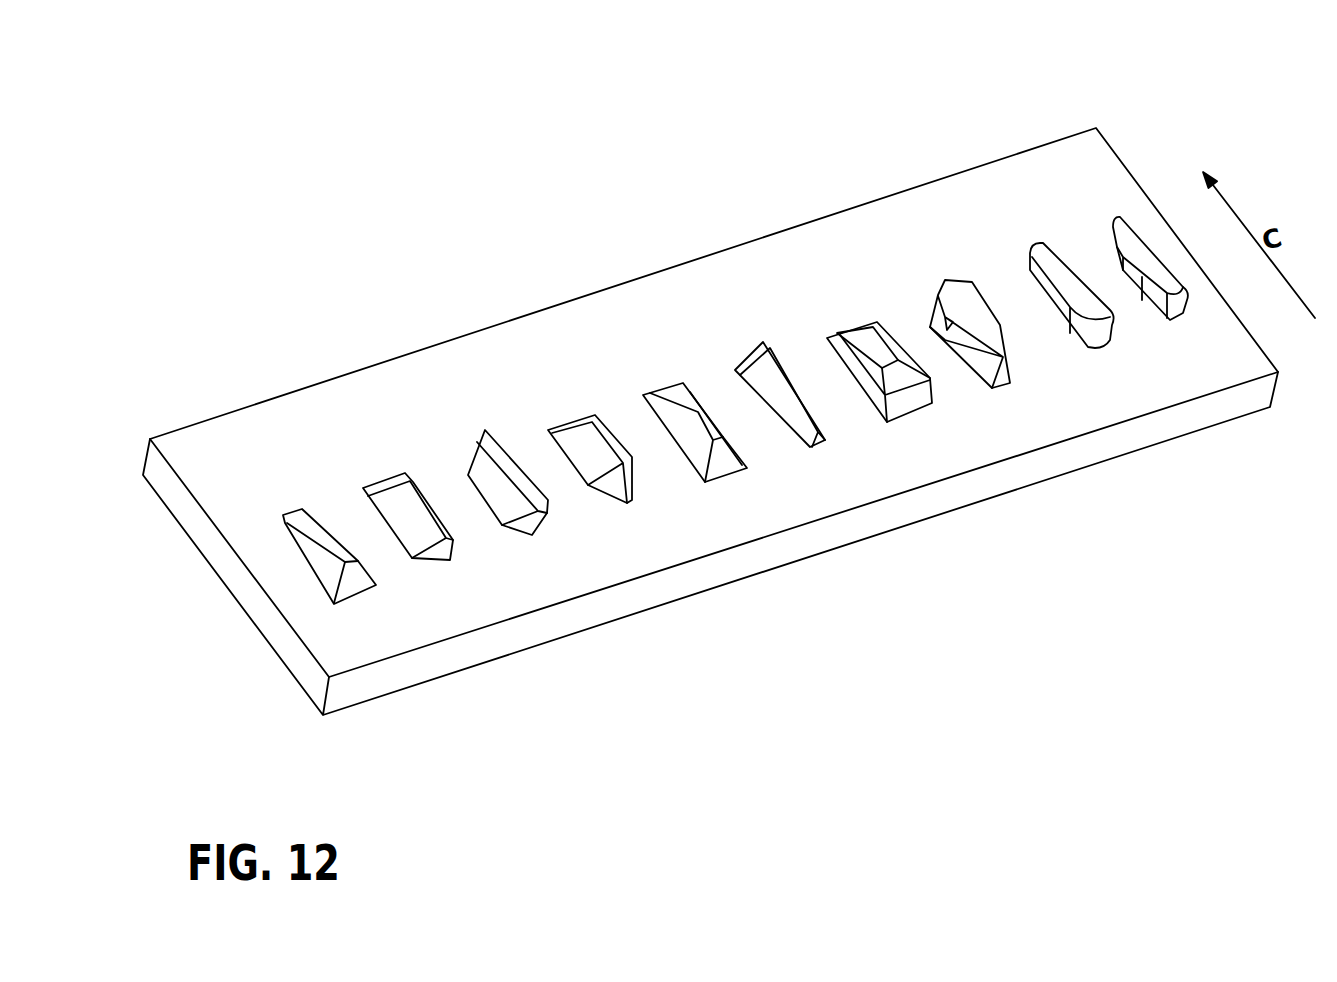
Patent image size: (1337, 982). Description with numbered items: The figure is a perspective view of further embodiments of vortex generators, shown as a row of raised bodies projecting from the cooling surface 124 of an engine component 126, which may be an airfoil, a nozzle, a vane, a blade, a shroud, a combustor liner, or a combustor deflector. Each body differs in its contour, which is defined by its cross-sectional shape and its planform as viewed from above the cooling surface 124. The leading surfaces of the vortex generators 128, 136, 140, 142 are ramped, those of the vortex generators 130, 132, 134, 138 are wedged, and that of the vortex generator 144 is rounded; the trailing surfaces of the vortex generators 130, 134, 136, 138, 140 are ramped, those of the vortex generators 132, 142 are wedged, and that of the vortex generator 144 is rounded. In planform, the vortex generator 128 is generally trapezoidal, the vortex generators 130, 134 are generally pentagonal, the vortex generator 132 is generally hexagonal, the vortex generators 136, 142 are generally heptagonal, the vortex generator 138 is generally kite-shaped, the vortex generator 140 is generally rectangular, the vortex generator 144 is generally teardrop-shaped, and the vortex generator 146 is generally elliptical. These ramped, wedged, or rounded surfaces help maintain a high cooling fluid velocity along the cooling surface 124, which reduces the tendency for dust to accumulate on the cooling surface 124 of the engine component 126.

The cooling surface 124 is at (255, 543).
The engine component 126 is at (156, 414).
The vortex generator 128 is at (310, 492).
The vortex generator 130 is at (413, 460).
The vortex generator 132 is at (505, 420).
The vortex generator 134 is at (610, 400).
The vortex generator 136 is at (697, 372).
The vortex generator 138 is at (782, 334).
The vortex generator 140 is at (887, 305).
The vortex generator 142 is at (985, 272).
The vortex generator 144 is at (1062, 239).
The vortex generator 146 is at (1147, 212).